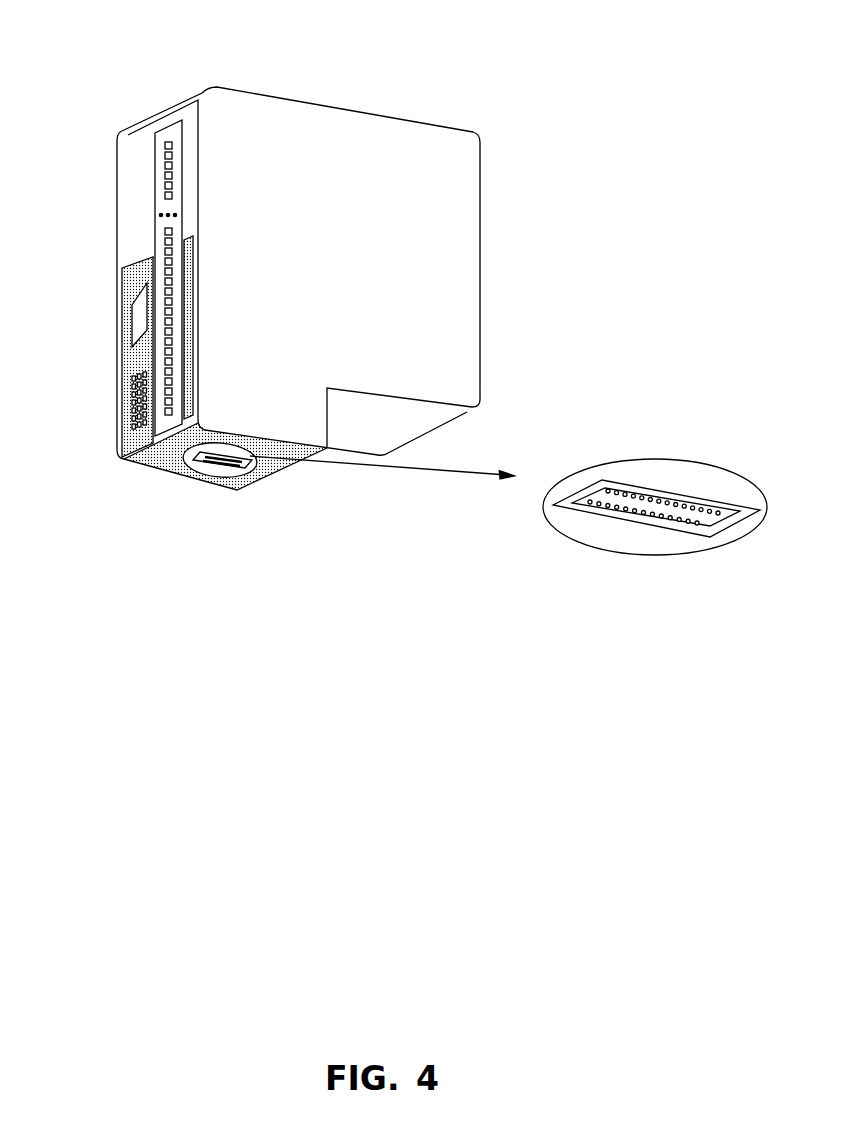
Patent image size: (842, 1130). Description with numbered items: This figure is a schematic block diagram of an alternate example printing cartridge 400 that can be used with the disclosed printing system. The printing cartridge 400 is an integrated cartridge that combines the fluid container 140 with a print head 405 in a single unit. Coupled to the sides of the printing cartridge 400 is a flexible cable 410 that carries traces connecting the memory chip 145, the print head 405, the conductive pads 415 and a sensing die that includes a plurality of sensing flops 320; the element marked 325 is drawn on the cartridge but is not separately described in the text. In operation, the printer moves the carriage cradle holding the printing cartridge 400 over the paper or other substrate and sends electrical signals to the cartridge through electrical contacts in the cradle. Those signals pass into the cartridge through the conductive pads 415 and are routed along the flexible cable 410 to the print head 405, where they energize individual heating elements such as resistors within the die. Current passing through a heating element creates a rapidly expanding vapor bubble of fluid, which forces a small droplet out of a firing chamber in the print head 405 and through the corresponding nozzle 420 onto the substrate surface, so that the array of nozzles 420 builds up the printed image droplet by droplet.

The printing cartridge 400 is at (164, 55).
The fluid container 140 is at (455, 266).
The sensing flops 320 is at (152, 137).
The indicator lights 325 is at (155, 207).
The memory chip 145 is at (140, 318).
The flexible cable 410 is at (133, 357).
The conductive pads 415 is at (133, 417).
The print head 405 is at (277, 471).
The nozzles 420 is at (645, 490).